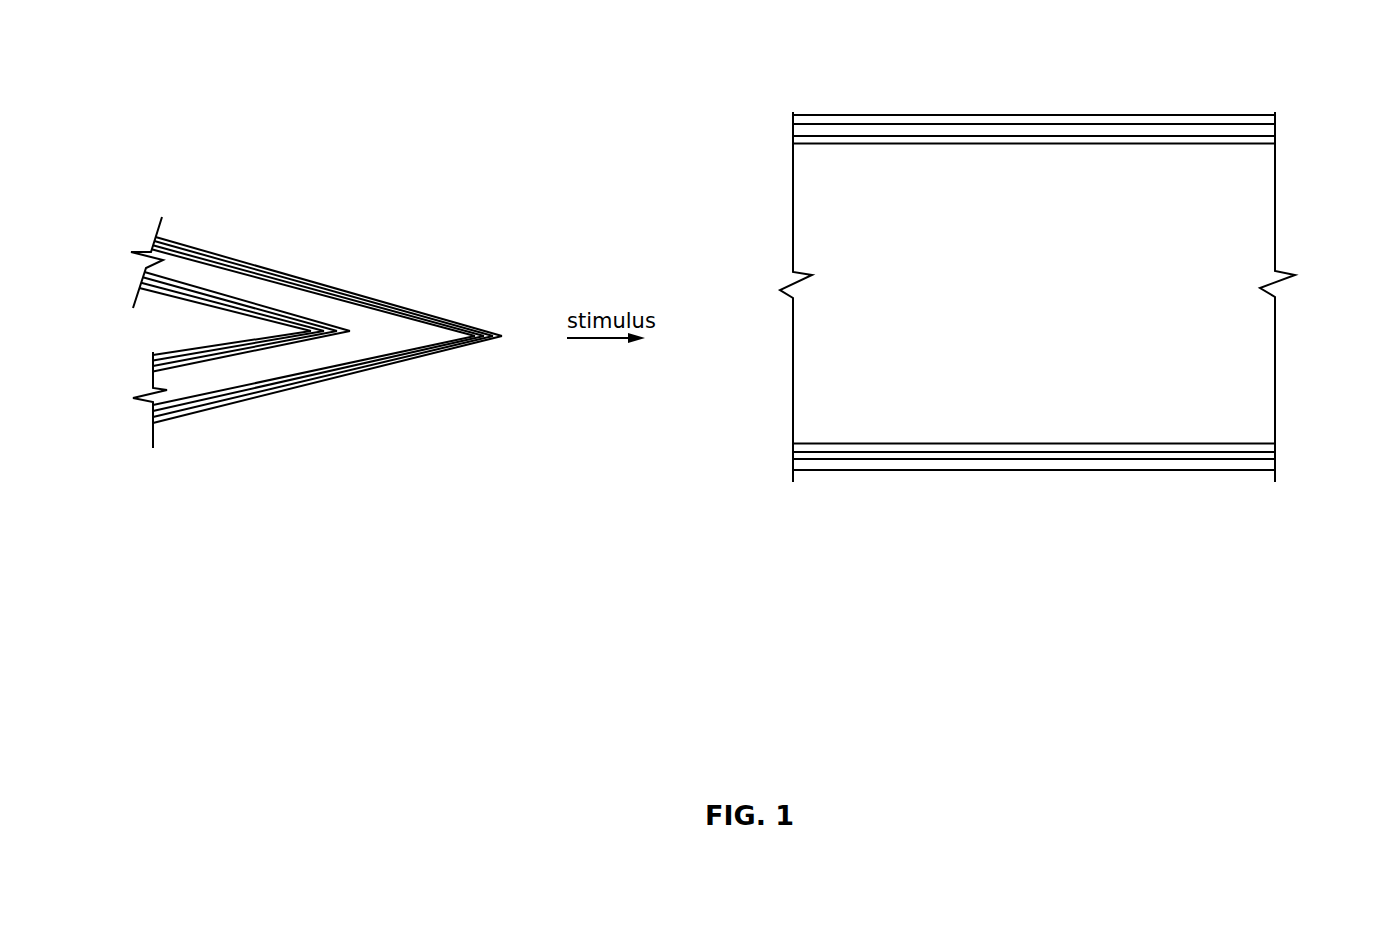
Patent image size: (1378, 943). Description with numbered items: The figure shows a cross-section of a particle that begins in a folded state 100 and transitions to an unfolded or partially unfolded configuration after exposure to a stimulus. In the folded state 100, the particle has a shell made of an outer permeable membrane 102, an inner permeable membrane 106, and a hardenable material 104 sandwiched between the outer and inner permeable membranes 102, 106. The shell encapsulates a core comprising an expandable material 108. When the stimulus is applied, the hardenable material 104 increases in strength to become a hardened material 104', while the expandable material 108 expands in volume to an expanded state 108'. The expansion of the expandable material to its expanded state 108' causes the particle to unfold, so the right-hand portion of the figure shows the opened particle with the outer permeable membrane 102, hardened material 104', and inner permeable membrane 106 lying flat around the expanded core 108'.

The folded state 100 is at (156, 176).
The outer permeable membrane 102 is at (272, 267).
The hardenable material 104 is at (708, 291).
The hardened material 104' is at (1038, 280).
The inner permeable membrane 106 is at (455, 328).
The expandable material 108 is at (194, 237).
The expanded state 108' is at (772, 369).